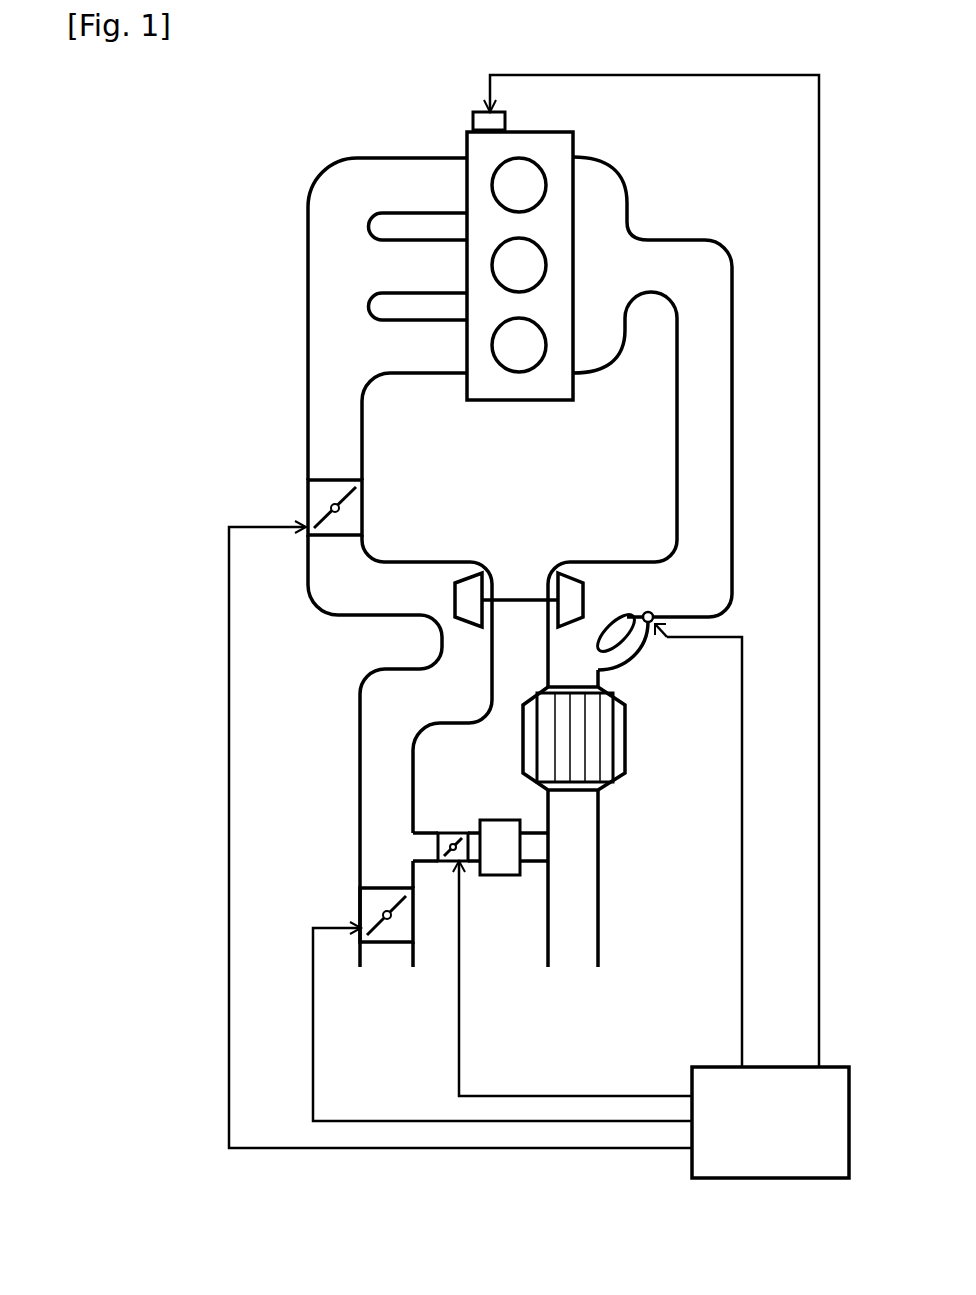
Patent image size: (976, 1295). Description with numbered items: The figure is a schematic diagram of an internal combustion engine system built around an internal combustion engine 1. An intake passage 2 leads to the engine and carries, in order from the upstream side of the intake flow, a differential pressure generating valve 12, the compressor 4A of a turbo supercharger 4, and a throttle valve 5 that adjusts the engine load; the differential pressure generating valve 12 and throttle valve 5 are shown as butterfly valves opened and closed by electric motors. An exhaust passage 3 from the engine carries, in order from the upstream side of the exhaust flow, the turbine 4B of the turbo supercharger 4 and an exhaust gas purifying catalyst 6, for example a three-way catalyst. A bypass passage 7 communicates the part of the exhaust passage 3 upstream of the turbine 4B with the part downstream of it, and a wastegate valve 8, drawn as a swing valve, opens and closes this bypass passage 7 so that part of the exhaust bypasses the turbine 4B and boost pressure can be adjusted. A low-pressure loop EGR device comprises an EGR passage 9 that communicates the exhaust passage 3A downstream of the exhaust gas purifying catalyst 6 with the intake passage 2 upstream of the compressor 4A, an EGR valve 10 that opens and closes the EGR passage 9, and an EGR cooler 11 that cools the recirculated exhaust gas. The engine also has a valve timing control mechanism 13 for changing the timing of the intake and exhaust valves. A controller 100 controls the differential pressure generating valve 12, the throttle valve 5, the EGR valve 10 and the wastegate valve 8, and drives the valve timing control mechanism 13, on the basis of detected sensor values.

The internal combustion engine 1 is at (488, 157).
The intake passage 2 is at (368, 726).
The exhaust passage 3 is at (718, 452).
The exhaust passage 3A is at (580, 848).
The turbo supercharger 4 is at (525, 541).
The compressor 4A is at (470, 586).
The turbine 4B is at (590, 569).
The throttle valve 5 is at (290, 505).
The exhaust gas purifying catalyst 6 is at (625, 748).
The bypass passage 7 is at (622, 655).
The wastegate valve 8 is at (662, 640).
The EGR passage 9 is at (531, 850).
The EGR valve 10 is at (447, 864).
The EGR cooler 11 is at (493, 868).
The differential pressure generating valve 12 is at (362, 905).
The valve timing control mechanism 13 is at (478, 112).
The controller 100 is at (828, 1077).